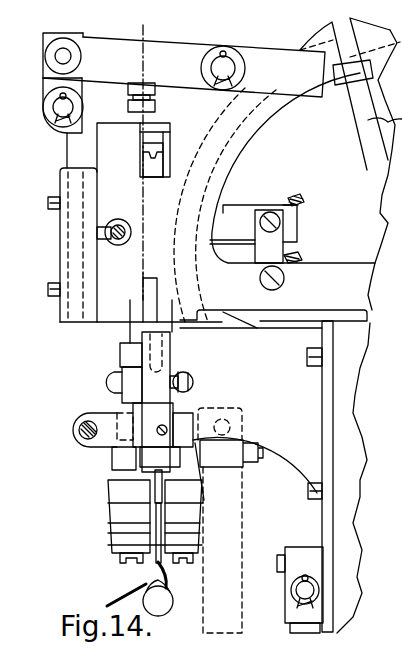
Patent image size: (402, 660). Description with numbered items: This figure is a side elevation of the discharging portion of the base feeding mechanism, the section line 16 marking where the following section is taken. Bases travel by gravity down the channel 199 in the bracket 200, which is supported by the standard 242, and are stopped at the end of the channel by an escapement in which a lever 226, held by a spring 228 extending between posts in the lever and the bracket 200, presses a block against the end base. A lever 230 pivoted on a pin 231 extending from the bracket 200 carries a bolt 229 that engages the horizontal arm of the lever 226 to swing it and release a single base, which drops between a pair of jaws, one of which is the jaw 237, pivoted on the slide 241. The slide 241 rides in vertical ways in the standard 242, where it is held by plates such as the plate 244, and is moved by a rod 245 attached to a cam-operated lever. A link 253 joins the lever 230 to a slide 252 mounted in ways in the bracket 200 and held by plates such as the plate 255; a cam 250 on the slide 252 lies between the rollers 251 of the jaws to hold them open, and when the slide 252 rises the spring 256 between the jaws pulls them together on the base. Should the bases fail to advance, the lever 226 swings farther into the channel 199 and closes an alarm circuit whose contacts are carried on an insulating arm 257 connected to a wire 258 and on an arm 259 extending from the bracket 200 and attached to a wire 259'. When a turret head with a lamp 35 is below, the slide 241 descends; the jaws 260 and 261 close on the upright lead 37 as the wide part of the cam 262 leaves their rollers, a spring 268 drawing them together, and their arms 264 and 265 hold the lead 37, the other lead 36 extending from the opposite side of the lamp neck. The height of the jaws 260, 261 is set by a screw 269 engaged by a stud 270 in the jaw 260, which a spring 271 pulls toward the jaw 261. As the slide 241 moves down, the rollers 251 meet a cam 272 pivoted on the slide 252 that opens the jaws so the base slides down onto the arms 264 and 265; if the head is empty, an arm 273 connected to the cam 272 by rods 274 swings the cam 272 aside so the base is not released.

The section line 16 is at (141, 30).
The lever 230 is at (163, 42).
The pin 231 is at (233, 57).
The link 253 is at (75, 88).
The bolt 229 is at (128, 108).
The lever 226 is at (160, 127).
The slide 252 is at (63, 160).
The bracket 200 is at (293, 118).
The channel 199 is at (233, 140).
The plate 255 is at (62, 205).
The spring 228 is at (117, 247).
The insulating arm 257 is at (240, 205).
The wire 258 is at (304, 201).
The arm 259 is at (294, 247).
The wire 259' is at (317, 253).
The slide 241 is at (271, 337).
The jaw 237 is at (171, 351).
The spring 256 is at (195, 381).
The cam 250 is at (118, 360).
The roller 251 is at (118, 380).
The rod 274 is at (75, 425).
The cam 272 is at (110, 459).
The screw 269 is at (256, 463).
The arm 273 is at (233, 513).
The jaw 261 is at (205, 533).
The jaw 260 is at (110, 522).
The lead 37 is at (155, 517).
The arm 264 is at (121, 557).
The arm 265 is at (173, 569).
The lead 36 is at (120, 597).
The lamp 35 is at (170, 612).
The rod 245 is at (295, 630).
The standard 242 is at (350, 531).
The plate 244 is at (333, 470).
The cam 262 is at (401, 330).
The spring 271 is at (391, 382).
The spring 268 is at (391, 410).
The stud 270 is at (391, 456).